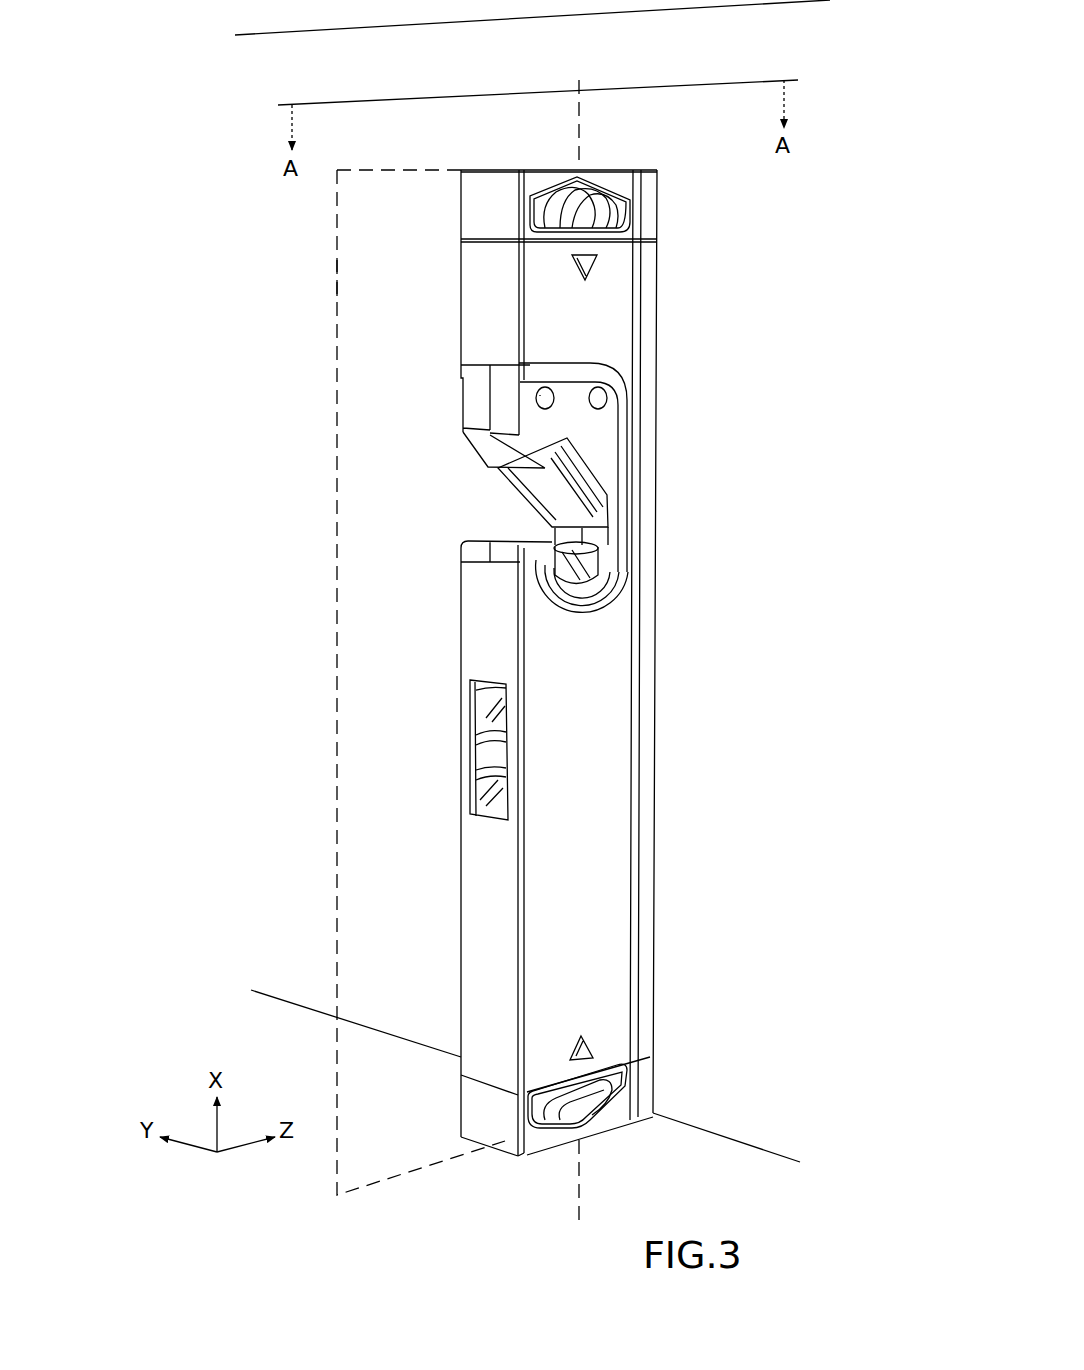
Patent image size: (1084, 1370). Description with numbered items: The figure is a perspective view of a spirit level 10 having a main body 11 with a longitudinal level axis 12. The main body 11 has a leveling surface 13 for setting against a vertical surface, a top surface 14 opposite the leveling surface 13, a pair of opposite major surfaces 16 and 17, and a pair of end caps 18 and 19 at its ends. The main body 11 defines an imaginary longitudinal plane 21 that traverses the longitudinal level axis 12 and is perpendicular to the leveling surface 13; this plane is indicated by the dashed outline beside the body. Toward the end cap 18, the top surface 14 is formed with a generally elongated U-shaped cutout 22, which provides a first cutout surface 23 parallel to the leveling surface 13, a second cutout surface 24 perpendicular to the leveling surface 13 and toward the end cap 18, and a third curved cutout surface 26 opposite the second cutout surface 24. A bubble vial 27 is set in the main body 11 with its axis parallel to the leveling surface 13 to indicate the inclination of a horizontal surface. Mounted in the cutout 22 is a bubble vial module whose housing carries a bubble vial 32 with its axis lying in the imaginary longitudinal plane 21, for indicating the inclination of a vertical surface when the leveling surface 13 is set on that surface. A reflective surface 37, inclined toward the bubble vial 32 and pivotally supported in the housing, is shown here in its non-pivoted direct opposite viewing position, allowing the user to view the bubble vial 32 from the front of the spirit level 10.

The spirit level 10 is at (232, 155).
The main body 11 is at (268, 268).
The longitudinal level axis 12 is at (580, 147).
The leveling surface 13 is at (658, 298).
The top surface 14 is at (487, 652).
The major surface 16 is at (618, 848).
The major surface 17 is at (460, 935).
The end cap 18 is at (548, 178).
The end cap 19 is at (535, 1140).
The imaginary longitudinal plane 21 is at (360, 408).
The U-shaped cutout 22 is at (697, 474).
The first cutout surface 23 is at (627, 448).
The second cutout surface 24 is at (547, 362).
The third curved cutout surface 26 is at (600, 614).
The bubble vial 27 is at (485, 758).
The bubble vial 32 is at (613, 565).
The reflective surface 37 is at (543, 487).